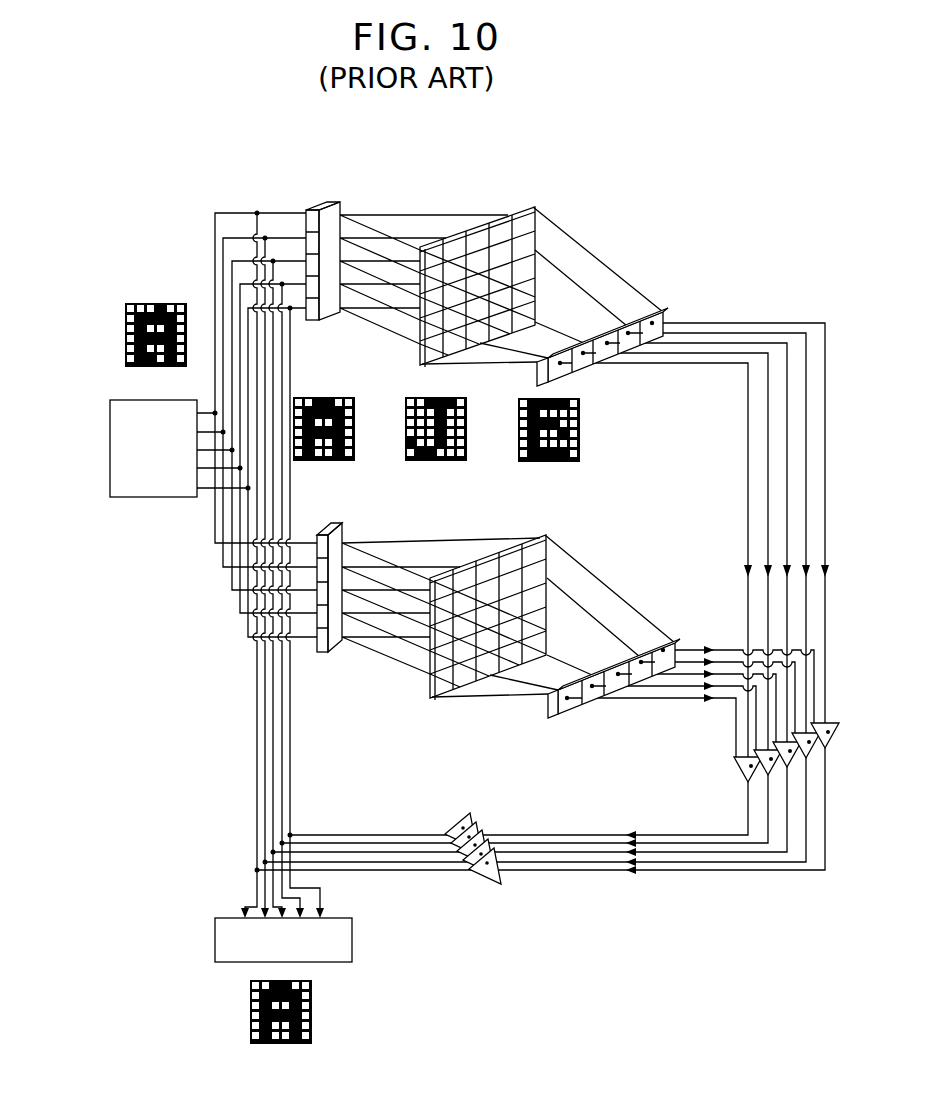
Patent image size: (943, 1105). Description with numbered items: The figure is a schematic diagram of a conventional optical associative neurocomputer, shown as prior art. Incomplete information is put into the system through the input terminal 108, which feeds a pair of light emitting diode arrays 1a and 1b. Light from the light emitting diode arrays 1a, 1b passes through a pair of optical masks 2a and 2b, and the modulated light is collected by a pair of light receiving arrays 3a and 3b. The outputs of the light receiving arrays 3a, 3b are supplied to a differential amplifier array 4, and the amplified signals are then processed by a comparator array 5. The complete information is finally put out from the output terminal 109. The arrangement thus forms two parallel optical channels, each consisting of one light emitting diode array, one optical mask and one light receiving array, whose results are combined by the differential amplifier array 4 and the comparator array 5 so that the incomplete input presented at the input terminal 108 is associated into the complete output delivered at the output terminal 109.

The light emitting diode array 1a is at (317, 205).
The optical mask 2a is at (528, 205).
The light receiving array 3a is at (655, 307).
The light emitting diode array 1b is at (345, 528).
The optical mask 2b is at (517, 537).
The light receiving array 3b is at (668, 640).
The differential amplifier array 4 is at (732, 775).
The comparator array 5 is at (493, 885).
The input terminal 108 is at (110, 410).
The output terminal 109 is at (215, 938).